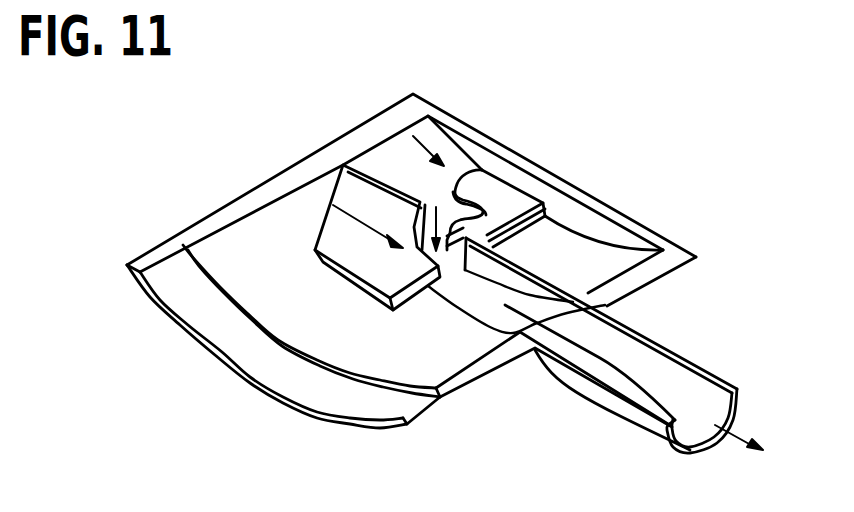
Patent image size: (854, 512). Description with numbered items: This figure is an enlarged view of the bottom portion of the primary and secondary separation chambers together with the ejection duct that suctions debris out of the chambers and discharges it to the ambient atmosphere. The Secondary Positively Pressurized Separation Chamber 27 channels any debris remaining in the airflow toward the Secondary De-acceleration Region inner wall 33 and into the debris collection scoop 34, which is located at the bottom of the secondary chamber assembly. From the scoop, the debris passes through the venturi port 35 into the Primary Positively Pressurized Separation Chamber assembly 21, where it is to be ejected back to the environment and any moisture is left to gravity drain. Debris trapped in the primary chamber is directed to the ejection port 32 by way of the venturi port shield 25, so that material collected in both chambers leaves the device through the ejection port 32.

The Primary Positively Pressurized Separation Chamber assembly 21 is at (250, 357).
The venturi port shield 25 is at (350, 252).
The Secondary Positively Pressurized Separation Chamber 27 is at (592, 238).
The ejection port 32 is at (623, 408).
The Secondary De-acceleration Region inner wall 33 is at (437, 190).
The debris collection scoop 34 is at (500, 188).
The venturi port 35 is at (453, 252).